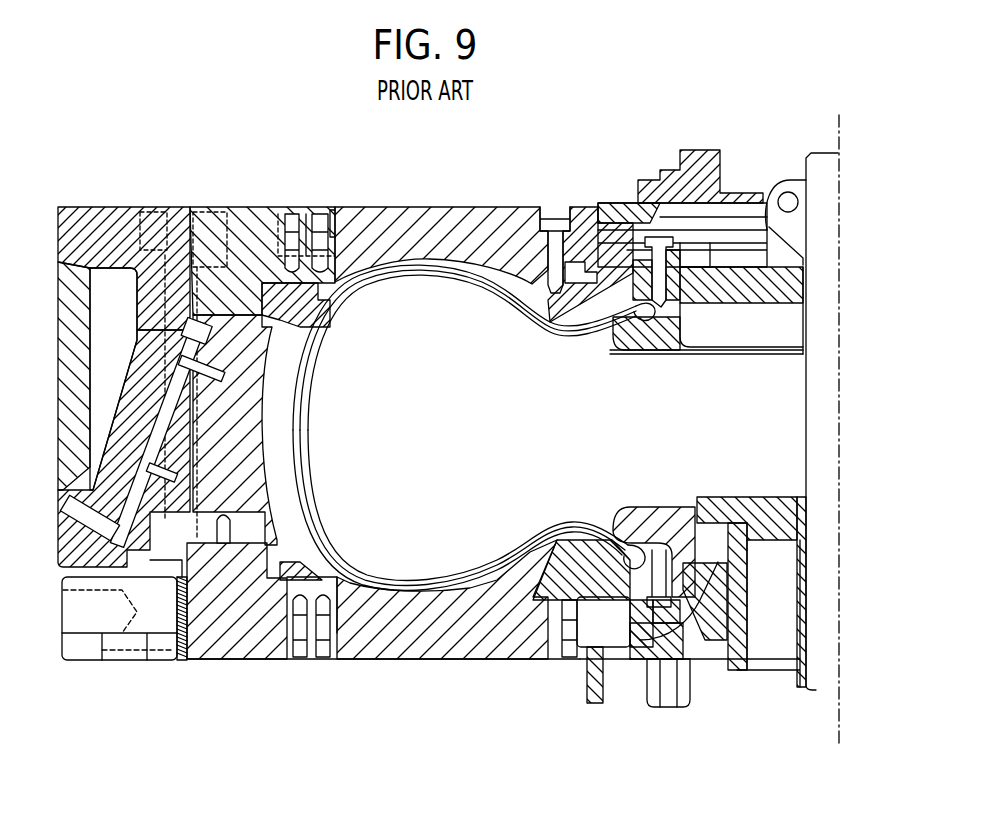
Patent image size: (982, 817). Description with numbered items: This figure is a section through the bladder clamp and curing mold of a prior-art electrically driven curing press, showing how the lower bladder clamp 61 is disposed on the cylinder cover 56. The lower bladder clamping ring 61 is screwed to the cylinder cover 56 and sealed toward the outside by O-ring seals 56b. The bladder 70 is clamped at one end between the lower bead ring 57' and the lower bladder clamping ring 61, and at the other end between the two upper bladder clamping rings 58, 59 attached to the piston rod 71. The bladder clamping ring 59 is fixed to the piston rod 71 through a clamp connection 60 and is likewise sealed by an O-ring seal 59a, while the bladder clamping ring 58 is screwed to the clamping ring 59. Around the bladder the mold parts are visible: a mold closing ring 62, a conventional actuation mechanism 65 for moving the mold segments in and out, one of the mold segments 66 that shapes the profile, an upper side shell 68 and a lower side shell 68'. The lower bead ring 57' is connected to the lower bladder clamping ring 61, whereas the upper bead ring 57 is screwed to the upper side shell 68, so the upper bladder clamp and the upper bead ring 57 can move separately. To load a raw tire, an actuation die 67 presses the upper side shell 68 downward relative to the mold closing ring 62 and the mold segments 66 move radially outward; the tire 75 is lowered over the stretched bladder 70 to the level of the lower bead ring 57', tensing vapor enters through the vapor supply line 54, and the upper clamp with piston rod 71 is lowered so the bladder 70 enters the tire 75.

The mold closing ring 62 is at (105, 240).
The actuation mechanism 65 is at (132, 366).
The mold segment 66 is at (180, 455).
The upper side shell 68 is at (481, 246).
The lower side shell 68' is at (447, 633).
The upper bead ring 57 is at (538, 229).
The lower bead ring 57' is at (588, 621).
The upper bladder clamping ring 58 is at (622, 268).
The actuation die 67 is at (698, 172).
The clamp connection 60 is at (781, 188).
The piston rod 71 is at (823, 207).
The bladder clamping ring 59 is at (770, 277).
The O-ring seal 59a is at (803, 292).
The lower bladder clamping ring 61 is at (640, 522).
The O-ring seals 56b is at (703, 548).
The cylinder cover 56 is at (705, 583).
The vapor supply line 54 is at (704, 638).
The bladder 70 is at (434, 588).
The tire 75 is at (297, 527).